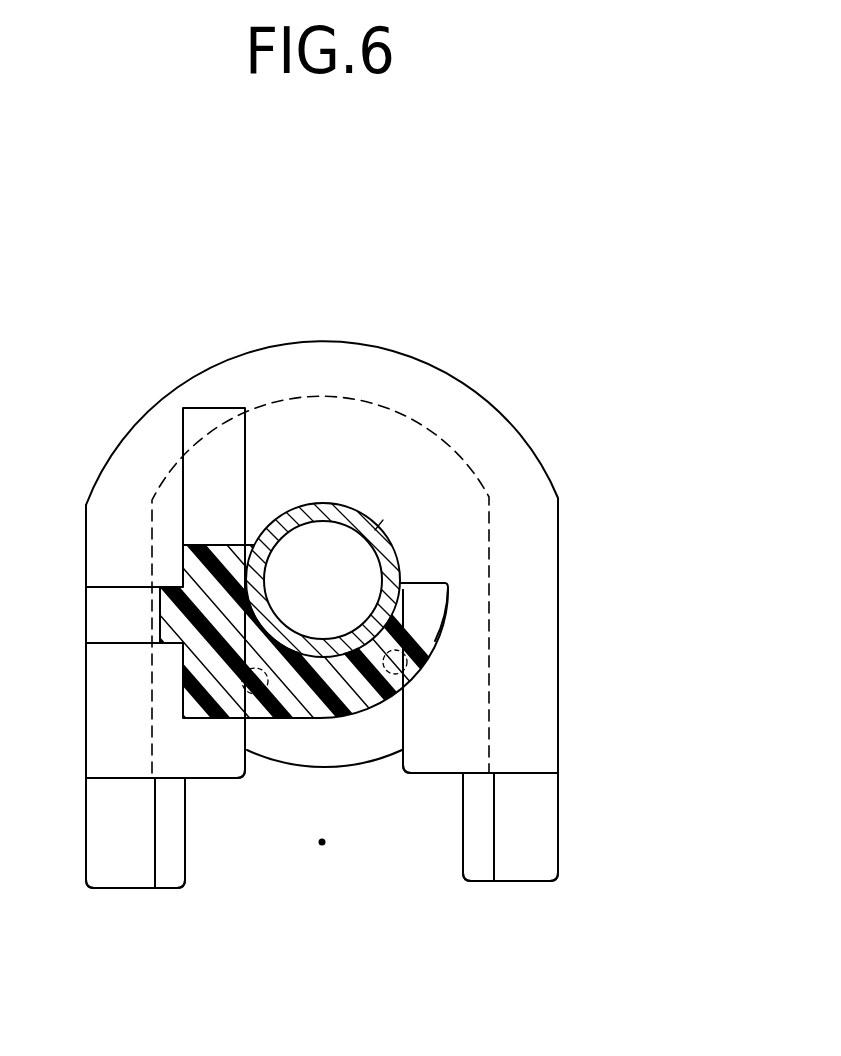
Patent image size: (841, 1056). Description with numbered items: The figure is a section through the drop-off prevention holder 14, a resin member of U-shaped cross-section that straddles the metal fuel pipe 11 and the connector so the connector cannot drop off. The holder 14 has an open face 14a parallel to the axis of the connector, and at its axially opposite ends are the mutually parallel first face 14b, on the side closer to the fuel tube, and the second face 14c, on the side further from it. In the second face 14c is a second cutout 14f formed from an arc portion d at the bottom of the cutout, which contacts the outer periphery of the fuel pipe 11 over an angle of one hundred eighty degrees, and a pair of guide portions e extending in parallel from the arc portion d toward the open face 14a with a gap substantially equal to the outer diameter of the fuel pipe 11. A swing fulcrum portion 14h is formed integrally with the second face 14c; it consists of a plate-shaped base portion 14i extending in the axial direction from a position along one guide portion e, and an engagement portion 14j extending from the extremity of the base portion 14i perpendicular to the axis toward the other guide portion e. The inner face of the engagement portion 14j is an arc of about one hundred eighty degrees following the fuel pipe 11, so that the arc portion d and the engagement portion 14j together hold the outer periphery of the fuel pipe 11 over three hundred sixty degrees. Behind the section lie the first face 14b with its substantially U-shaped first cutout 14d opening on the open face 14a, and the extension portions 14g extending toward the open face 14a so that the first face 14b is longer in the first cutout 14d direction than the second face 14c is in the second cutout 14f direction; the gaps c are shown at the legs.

The drop-off prevention holder 14 is at (549, 478).
The swing fulcrum portion 14h is at (181, 540).
The base portion 14i is at (228, 488).
The fuel pipe 11 is at (327, 503).
The arc portion d is at (373, 534).
The engagement portion 14j is at (435, 641).
The second face 14c is at (465, 737).
The guide portion e is at (462, 678).
The second cutout 14f is at (395, 717).
The first face 14b is at (170, 803).
The first cutout 14d is at (458, 818).
The open face 14a is at (323, 847).
The gap c is at (470, 937).
The extension portion 14g is at (531, 932).